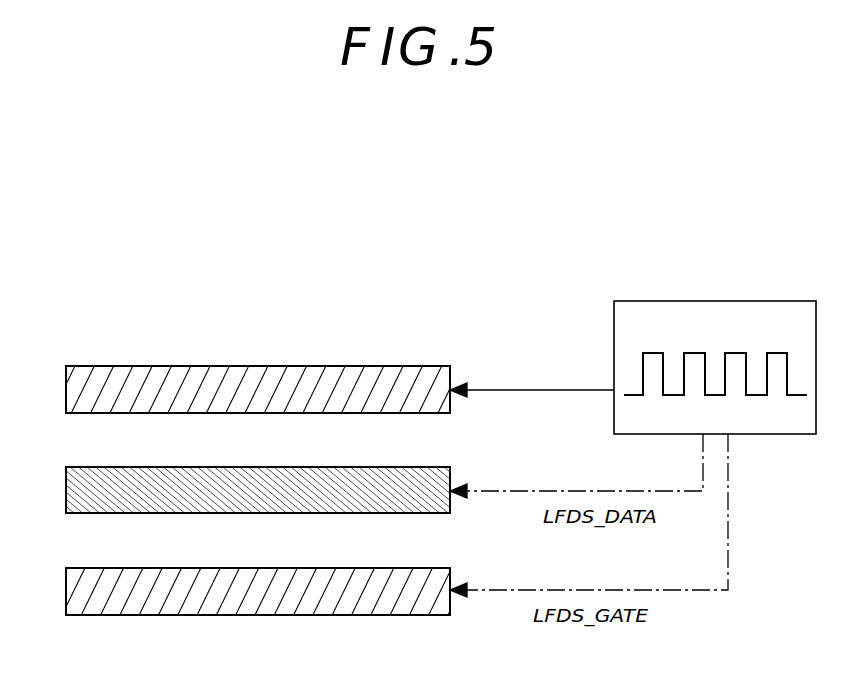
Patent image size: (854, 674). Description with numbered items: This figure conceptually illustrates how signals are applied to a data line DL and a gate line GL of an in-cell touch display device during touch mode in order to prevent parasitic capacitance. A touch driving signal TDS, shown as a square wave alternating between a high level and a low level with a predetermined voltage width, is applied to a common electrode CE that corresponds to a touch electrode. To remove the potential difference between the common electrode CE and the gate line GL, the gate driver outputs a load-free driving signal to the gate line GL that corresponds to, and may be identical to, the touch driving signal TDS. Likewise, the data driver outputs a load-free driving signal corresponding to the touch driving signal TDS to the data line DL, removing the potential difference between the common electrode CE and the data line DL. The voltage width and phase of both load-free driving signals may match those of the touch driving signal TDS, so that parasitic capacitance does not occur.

The common electrode CE is at (238, 389).
The data line DL is at (255, 490).
The gate line GL is at (238, 591).
The touch driving signal TDS is at (715, 367).